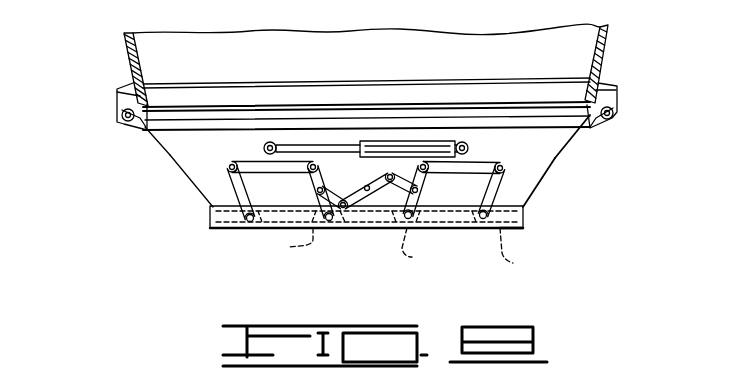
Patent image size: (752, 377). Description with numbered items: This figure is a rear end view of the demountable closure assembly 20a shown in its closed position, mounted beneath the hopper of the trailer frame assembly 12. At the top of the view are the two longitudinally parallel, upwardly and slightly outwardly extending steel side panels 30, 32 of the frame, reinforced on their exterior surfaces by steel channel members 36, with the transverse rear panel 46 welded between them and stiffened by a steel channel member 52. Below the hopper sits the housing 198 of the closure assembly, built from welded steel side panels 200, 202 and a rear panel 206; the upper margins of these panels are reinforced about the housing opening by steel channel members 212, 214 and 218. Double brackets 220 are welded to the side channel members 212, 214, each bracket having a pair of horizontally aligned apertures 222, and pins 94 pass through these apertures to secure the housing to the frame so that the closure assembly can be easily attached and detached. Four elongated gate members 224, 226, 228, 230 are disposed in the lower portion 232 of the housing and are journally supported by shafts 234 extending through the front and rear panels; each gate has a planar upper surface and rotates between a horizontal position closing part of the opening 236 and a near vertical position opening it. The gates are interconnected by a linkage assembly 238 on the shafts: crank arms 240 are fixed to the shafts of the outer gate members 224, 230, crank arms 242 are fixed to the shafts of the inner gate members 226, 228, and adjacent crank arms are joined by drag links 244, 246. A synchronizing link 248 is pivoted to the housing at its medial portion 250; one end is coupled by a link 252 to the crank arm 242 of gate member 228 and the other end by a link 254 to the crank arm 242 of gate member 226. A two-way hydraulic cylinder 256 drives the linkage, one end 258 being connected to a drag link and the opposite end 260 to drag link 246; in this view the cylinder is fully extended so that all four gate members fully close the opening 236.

The trailer frame assembly 12 is at (185, 114).
The demountable closure assembly 20a is at (210, 235).
The side panel 30 is at (125, 43).
The side panel 32 is at (610, 33).
The steel channel member 36 is at (129, 80).
The rear panel 46 is at (565, 33).
The steel channel member 52 is at (185, 95).
The pin 94 is at (125, 125).
The housing 198 is at (172, 150).
The side panel 200 is at (167, 145).
The side panel 202 is at (570, 142).
The rear panel 206 is at (543, 157).
The steel channel member 212 is at (121, 88).
The steel channel member 214 is at (613, 90).
The steel channel member 218 is at (352, 113).
The double bracket 220 is at (122, 118).
The aperture 222 is at (118, 113).
The gate member 224 is at (208, 220).
The gate member 226 is at (283, 245).
The gate member 228 is at (424, 248).
The gate member 230 is at (526, 253).
The lower portion 232 is at (525, 212).
The shaft 234 is at (485, 228).
The opening 236 is at (513, 228).
The linkage assembly 238 is at (490, 160).
The crank arm 240 is at (233, 180).
The crank arm 242 is at (315, 198).
The drag link 244 is at (243, 165).
The drag link 246 is at (476, 165).
The synchronizing link 248 is at (374, 194).
The medial portion 250 is at (341, 209).
The link 252 is at (423, 145).
The link 254 is at (331, 185).
The two-way hydraulic cylinder 256 is at (398, 176).
The end of hydraulic cylinder 258 is at (290, 146).
The end of hydraulic cylinder 260 is at (457, 140).